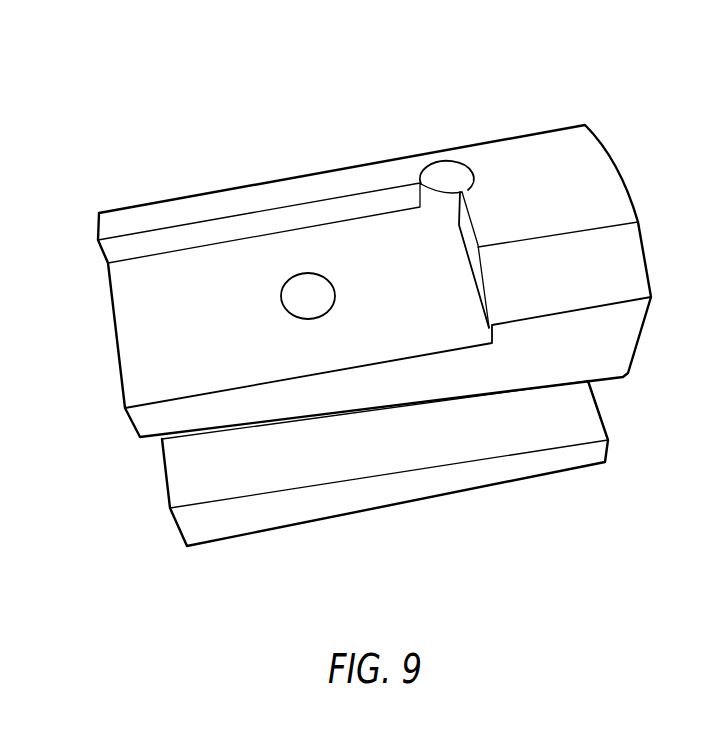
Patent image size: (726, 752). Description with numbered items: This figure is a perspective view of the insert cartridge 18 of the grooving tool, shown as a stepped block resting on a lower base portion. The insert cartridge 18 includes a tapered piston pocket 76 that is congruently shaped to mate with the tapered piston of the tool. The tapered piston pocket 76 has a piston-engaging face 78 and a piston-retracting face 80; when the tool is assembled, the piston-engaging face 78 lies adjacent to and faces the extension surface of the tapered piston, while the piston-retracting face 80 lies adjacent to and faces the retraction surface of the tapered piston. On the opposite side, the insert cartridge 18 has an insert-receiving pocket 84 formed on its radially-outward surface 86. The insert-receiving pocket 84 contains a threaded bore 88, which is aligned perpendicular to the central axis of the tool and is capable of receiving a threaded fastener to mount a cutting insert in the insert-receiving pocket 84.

The insert cartridge 18 is at (383, 280).
The tapered piston pocket 76 is at (381, 397).
The piston-engaging face 78 is at (538, 387).
The piston-retracting face 80 is at (470, 448).
The insert-receiving pocket 84 is at (374, 255).
The radially-outward surface 86 is at (522, 172).
The threaded bore 88 is at (304, 300).